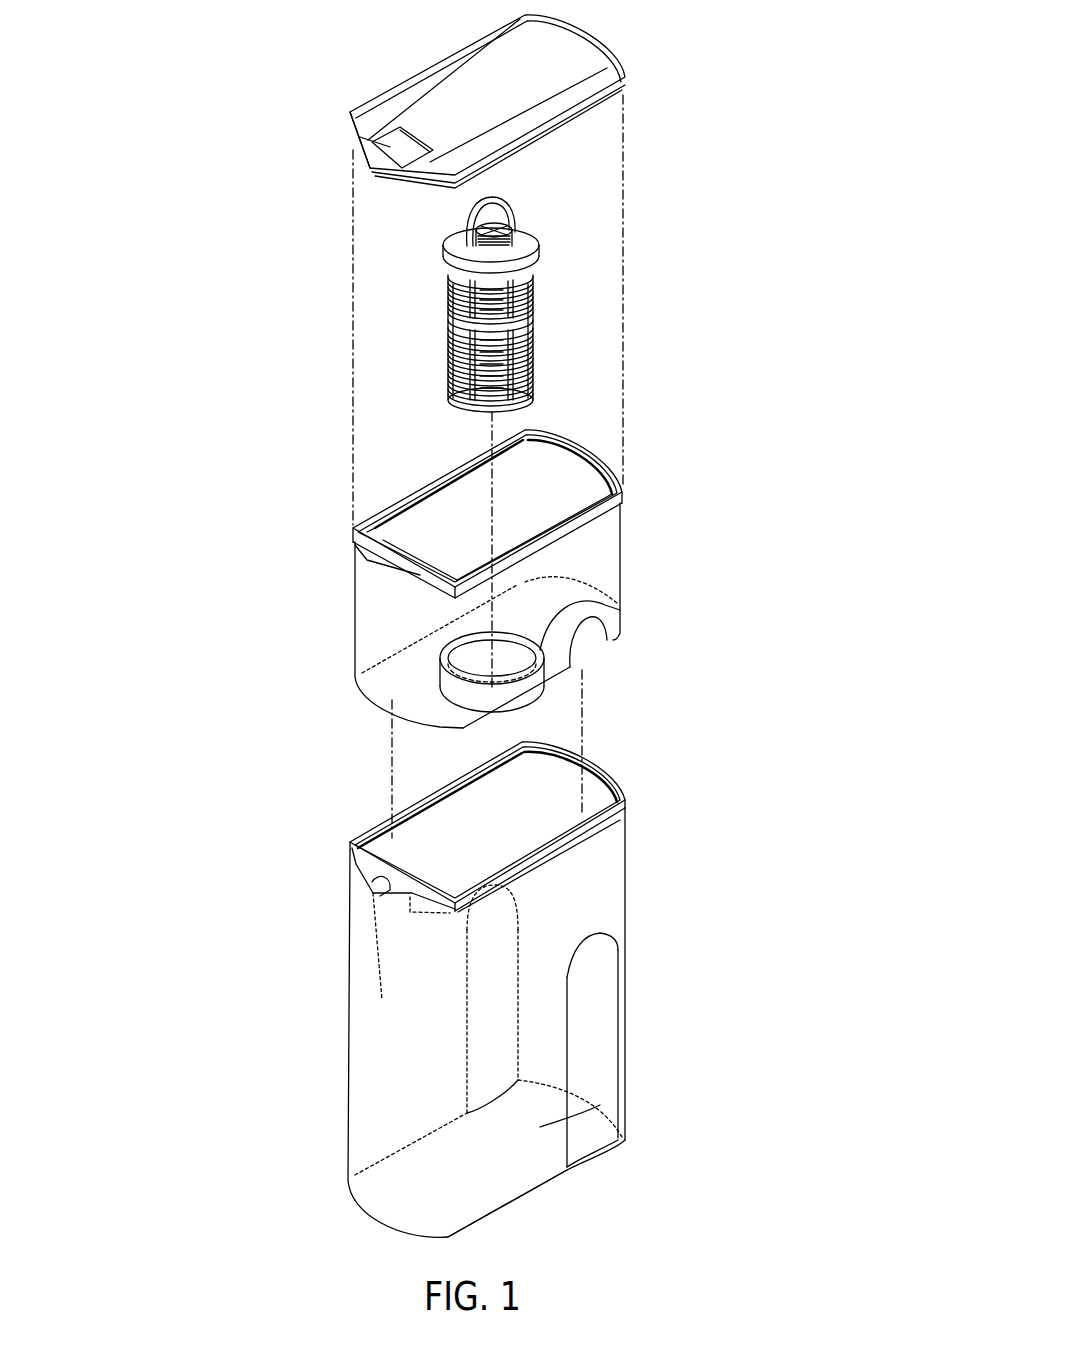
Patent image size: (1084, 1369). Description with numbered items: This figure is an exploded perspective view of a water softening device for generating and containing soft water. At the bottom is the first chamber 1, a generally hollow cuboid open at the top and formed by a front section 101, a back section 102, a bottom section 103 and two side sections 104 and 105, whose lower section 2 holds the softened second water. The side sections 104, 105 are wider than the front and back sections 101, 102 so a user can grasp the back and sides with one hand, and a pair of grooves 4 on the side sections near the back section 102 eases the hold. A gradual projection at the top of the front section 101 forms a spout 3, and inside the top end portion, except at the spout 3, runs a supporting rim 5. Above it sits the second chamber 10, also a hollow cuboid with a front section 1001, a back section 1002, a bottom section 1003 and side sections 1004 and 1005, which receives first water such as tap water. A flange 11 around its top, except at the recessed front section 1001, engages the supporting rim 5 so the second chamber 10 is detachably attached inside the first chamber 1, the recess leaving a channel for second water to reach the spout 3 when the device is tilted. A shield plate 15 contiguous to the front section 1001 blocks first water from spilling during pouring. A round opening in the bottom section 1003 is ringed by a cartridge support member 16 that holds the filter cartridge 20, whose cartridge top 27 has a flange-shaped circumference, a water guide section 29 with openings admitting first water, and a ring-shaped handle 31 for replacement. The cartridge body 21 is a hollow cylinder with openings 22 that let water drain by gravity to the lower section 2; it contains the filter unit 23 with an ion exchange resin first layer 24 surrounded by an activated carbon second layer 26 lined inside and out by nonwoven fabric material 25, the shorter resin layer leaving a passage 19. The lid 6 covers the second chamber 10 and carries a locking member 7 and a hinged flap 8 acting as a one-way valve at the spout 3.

The first chamber 1 is at (482, 965).
The lower section 2 is at (600, 1105).
The spout 3 is at (390, 892).
The grooves 4 is at (593, 965).
The supporting rim 5 is at (610, 778).
The lid 6 is at (346, 59).
The locking member 7 is at (587, 115).
The flap 8 is at (378, 141).
The second chamber 10 is at (501, 582).
The flange 11 is at (600, 456).
The shield plate 15 is at (367, 560).
The cartridge support member 16 is at (535, 640).
The passage 19 is at (448, 298).
The filter cartridge 20 is at (518, 316).
The cartridge body 21 is at (536, 388).
The openings 22 is at (537, 362).
The filter unit 23 is at (450, 373).
The first layer 24 is at (535, 346).
The nonwoven fabric material 25 is at (605, 355).
The second layer 26 is at (620, 371).
The cartridge top 27 is at (538, 265).
The water guide section 29 is at (525, 240).
The handle 31 is at (495, 201).
The front section 101 is at (368, 1075).
The back section 102 is at (567, 750).
The bottom section 103 is at (490, 1200).
The side section 104 is at (607, 902).
The side section 105 is at (425, 850).
The front section 1001 is at (368, 647).
The back section 1002 is at (546, 450).
The bottom section 1003 is at (407, 697).
The side section 1004 is at (598, 535).
The side section 1005 is at (423, 515).